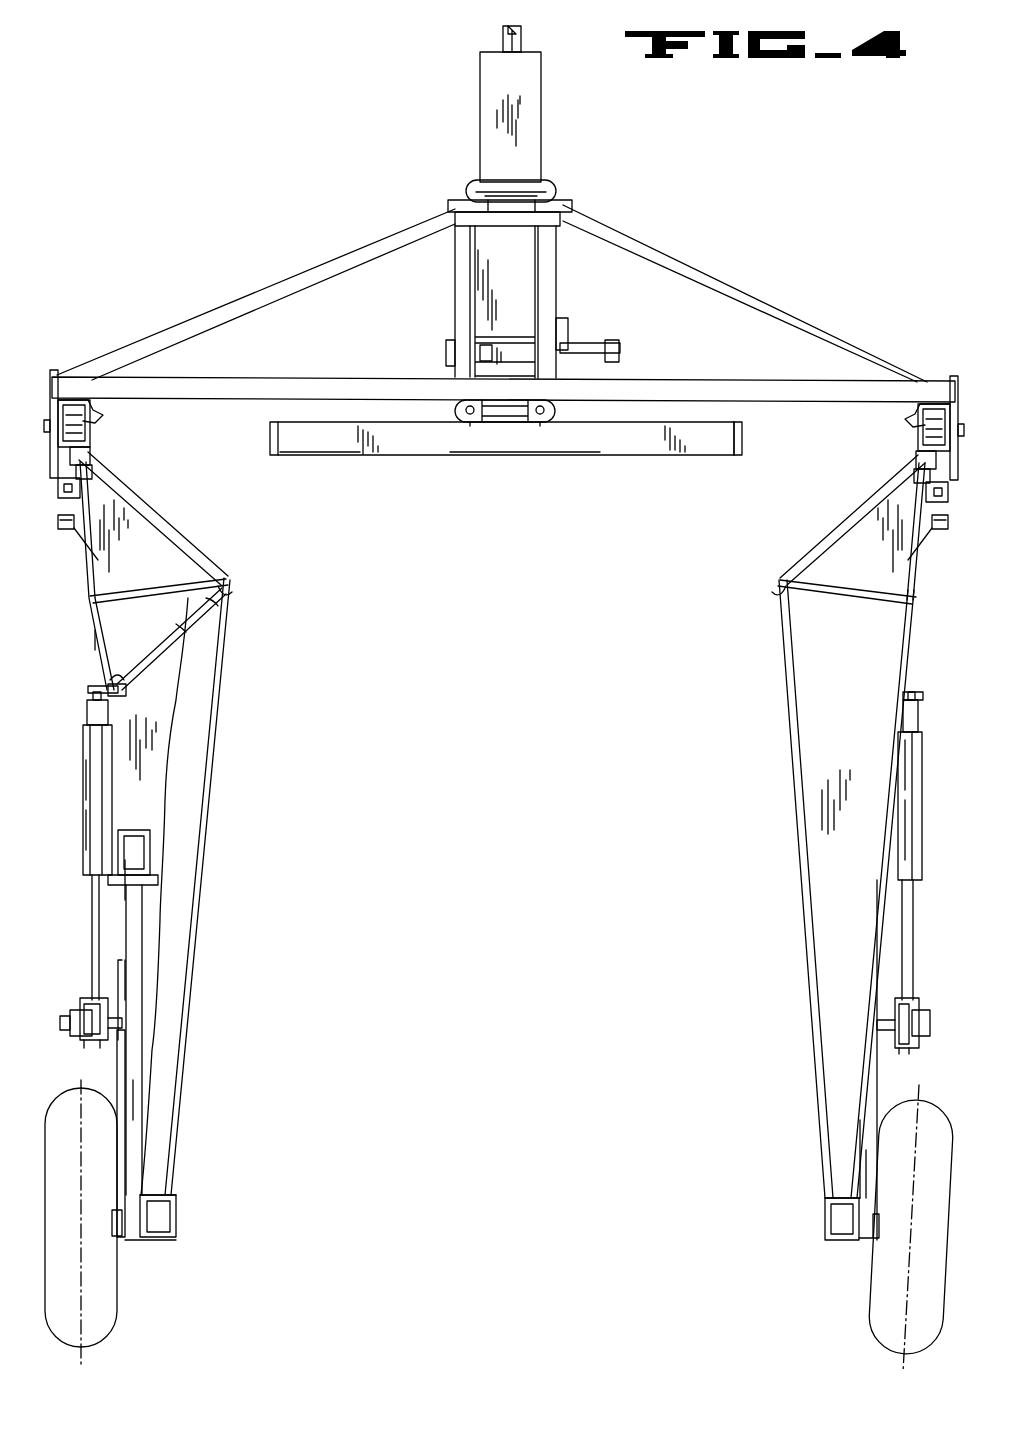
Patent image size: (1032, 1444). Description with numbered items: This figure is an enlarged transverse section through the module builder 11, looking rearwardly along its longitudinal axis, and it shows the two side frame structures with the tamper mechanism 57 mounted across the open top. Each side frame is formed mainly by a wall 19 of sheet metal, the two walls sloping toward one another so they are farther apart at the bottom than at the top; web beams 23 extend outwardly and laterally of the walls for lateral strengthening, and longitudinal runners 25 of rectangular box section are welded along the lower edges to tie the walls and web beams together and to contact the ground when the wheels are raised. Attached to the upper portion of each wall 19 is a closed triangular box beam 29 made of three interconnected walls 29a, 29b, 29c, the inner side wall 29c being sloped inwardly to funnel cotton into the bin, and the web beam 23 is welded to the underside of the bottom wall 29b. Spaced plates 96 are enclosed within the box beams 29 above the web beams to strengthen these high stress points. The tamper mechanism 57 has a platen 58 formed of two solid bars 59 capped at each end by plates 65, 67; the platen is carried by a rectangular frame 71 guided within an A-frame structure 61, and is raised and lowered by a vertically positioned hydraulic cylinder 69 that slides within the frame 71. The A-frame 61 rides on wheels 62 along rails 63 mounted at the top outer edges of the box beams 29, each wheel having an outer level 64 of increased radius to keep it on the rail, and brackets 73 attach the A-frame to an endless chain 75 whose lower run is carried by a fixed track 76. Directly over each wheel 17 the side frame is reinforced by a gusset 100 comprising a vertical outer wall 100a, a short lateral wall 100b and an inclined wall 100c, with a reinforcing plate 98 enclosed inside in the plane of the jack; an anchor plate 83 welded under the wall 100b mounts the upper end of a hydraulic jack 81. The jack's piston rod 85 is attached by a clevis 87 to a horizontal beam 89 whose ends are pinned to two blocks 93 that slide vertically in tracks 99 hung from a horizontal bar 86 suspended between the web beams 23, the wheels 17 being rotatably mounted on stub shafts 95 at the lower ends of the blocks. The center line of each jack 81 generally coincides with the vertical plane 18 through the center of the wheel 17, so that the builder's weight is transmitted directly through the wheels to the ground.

The module builder 11 is at (705, 139).
The wheels 17 is at (100, 1284).
The vertical plane 18 is at (90, 1318).
The wall 19 is at (206, 789).
The web beams 23 is at (160, 742).
The longitudinal runners 25 is at (176, 1208).
The triangular box beam 29 is at (150, 512).
The wall of triangular box beam 29a is at (86, 602).
The bottom wall of triangular box beam 29b is at (238, 580).
The inner side wall of triangular box beam 29c is at (190, 547).
The tamper mechanism 57 is at (566, 122).
The platen 58 is at (368, 466).
The solid bars 59 is at (512, 456).
The A-frame structure 61 is at (669, 243).
The wheels 62 is at (92, 436).
The rails 63 is at (96, 471).
The outer level 64 is at (60, 405).
The end plate 65 is at (270, 436).
The end plate 67 is at (742, 438).
The hydraulic cylinder 69 is at (503, 30).
The rectangular frame 71 is at (468, 78).
The brackets 73 is at (80, 490).
The endless chain 75 is at (102, 478).
The fixed track 76 is at (78, 530).
The hydraulic jack 81 is at (101, 810).
The anchor plate 83 is at (96, 690).
The piston rod 85 is at (93, 931).
The horizontal bar 86 is at (152, 853).
The clevis 87 is at (88, 1006).
The horizontal beam 89 is at (96, 1046).
The blocks 93 is at (128, 1046).
The stub shafts 95 is at (119, 1236).
The plates 96 is at (147, 536).
The reinforcing plate 98 is at (156, 644).
The tracks 99 is at (136, 906).
The gussets 100 is at (206, 605).
The outer wall 100a is at (95, 640).
The short wall 100b is at (120, 686).
The inclined wall 100c is at (180, 628).